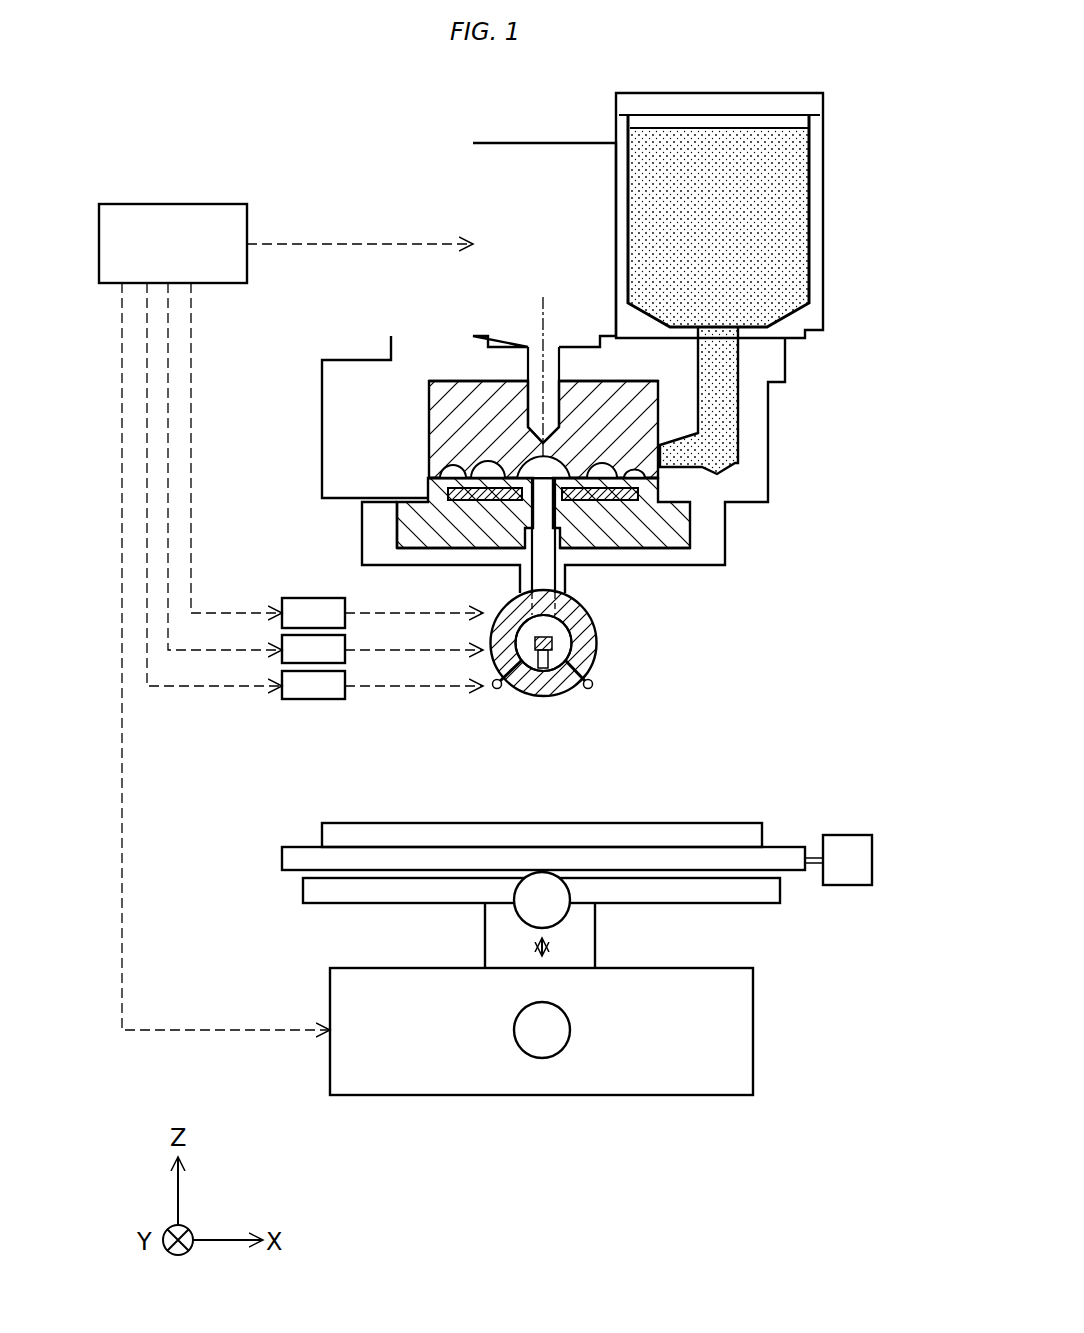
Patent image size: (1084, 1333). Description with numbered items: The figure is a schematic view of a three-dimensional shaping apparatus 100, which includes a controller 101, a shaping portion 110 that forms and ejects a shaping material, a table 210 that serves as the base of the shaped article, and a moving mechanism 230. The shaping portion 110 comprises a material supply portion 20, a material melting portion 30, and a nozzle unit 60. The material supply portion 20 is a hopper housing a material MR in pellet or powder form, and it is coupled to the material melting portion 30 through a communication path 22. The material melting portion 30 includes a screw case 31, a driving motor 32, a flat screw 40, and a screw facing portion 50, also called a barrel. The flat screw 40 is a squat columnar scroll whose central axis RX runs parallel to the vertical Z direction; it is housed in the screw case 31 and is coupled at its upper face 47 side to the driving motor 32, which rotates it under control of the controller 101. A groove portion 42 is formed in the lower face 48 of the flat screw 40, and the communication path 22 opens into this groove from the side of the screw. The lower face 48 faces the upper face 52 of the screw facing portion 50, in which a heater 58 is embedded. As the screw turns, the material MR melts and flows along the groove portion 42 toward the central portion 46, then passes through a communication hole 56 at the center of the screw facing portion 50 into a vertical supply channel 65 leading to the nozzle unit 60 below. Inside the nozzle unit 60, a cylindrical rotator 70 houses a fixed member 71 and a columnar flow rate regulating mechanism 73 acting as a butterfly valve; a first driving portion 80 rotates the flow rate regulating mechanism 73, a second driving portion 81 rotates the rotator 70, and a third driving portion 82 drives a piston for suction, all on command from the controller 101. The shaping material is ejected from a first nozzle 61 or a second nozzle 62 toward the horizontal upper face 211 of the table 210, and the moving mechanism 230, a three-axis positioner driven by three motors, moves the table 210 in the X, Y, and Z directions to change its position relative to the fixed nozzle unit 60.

The three-dimensional shaping apparatus 100 is at (222, 136).
The controller 101 is at (172, 204).
The shaping portion 110 is at (413, 131).
The material melting portion 30 is at (365, 200).
The screw case 31 is at (437, 338).
The driving motor 32 is at (473, 173).
The material supply portion 20 is at (761, 215).
The material MR is at (787, 178).
The communication path 22 is at (715, 405).
The central axis RX is at (543, 313).
The flat screw 40 is at (470, 405).
The upper face 47 is at (463, 381).
The central portion 46 is at (480, 430).
The groove portion 42 is at (520, 465).
The upper face 52 is at (440, 472).
The lower face 48 is at (448, 493).
The screw facing portion 50 is at (415, 508).
The heater 58 is at (680, 528).
The communication hole 56 is at (672, 547).
The nozzle unit 60 is at (613, 611).
The supply channel 65 is at (545, 580).
The rotator 70 is at (595, 663).
The flow rate regulating mechanism 73 is at (570, 615).
The fixed member 71 is at (568, 650).
The first nozzle 61 is at (500, 692).
The second nozzle 62 is at (590, 692).
The first driving portion 80 is at (345, 606).
The second driving portion 81 is at (345, 644).
The third driving portion 82 is at (345, 681).
The upper face 211 is at (625, 823).
The table 210 is at (708, 828).
The moving mechanism 230 is at (584, 940).